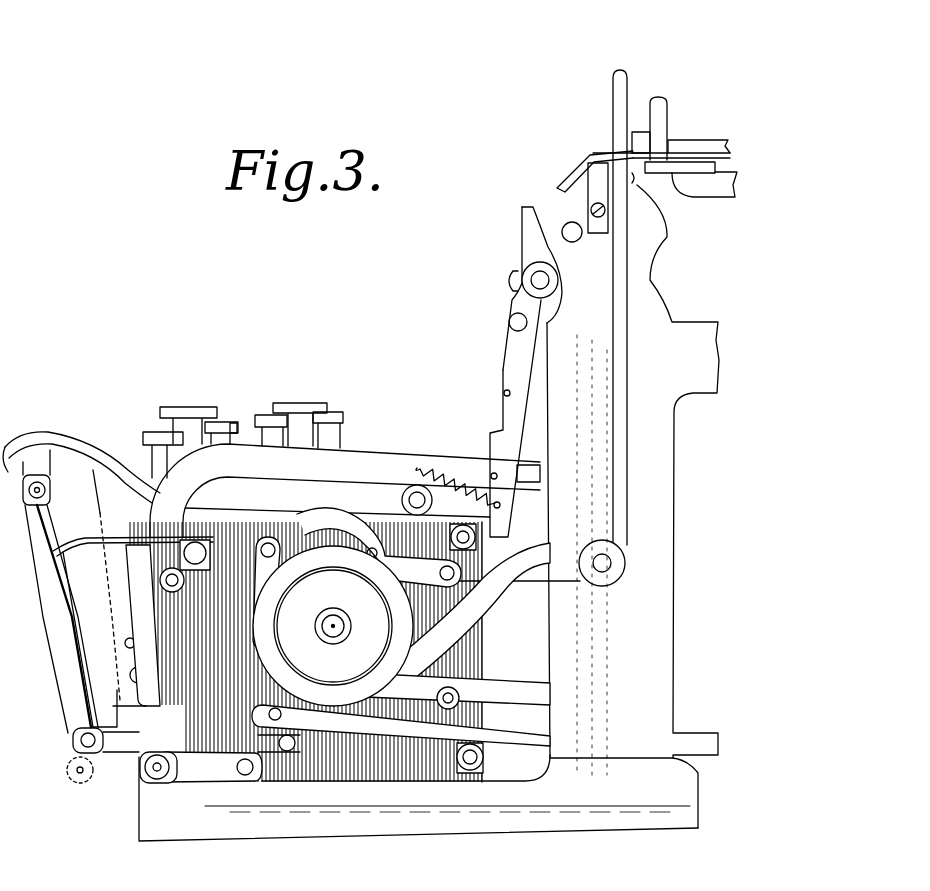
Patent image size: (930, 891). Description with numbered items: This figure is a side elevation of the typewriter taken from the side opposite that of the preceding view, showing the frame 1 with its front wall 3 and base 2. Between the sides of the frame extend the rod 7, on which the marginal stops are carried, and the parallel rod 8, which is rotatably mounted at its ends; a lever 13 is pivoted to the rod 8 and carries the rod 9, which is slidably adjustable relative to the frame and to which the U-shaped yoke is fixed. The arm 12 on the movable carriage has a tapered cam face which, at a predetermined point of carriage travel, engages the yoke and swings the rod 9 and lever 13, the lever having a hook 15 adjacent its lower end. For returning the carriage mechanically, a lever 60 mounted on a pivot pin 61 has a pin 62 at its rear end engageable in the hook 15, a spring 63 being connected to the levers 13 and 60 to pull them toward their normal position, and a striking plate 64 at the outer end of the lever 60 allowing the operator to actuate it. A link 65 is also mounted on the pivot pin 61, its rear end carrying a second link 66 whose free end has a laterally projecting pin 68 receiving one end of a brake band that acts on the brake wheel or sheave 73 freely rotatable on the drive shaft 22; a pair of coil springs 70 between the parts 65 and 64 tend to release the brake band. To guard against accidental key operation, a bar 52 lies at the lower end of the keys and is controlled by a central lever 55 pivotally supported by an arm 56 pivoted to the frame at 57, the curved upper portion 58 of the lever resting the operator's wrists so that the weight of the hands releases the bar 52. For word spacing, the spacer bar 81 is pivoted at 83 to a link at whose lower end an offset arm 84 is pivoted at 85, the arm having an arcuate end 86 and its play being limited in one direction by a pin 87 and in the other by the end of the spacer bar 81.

The frame 1 is at (660, 404).
The base 2 is at (443, 820).
The front wall 3 is at (560, 651).
The rod 7 is at (566, 223).
The rod 8 is at (528, 272).
The rod 9 is at (509, 321).
The arm 12 is at (580, 172).
The lever 13 is at (503, 351).
The hook 15 is at (500, 430).
The drive shaft 22 is at (333, 614).
The bar 52 is at (118, 672).
The central lever 55 is at (43, 628).
The arm 56 is at (368, 498).
The pivot 57 is at (458, 455).
The upper transversely extending portion 58 is at (47, 432).
The lever 60 is at (350, 460).
The pivot pin 61 is at (185, 581).
The pin 62 is at (213, 767).
The spring 63 is at (110, 777).
The striking plate 64 is at (77, 532).
The link 65 is at (250, 600).
The link 66 is at (258, 568).
The pin 68 is at (268, 638).
The coil springs 70 is at (167, 640).
The brake wheel or sheave 73 is at (372, 628).
The spacer bar 81 is at (388, 724).
The pivot 83 is at (340, 740).
The offset arm 84 is at (445, 712).
The pivot 85 is at (283, 705).
The arcuate end 86 is at (255, 714).
The pin 87 is at (290, 778).